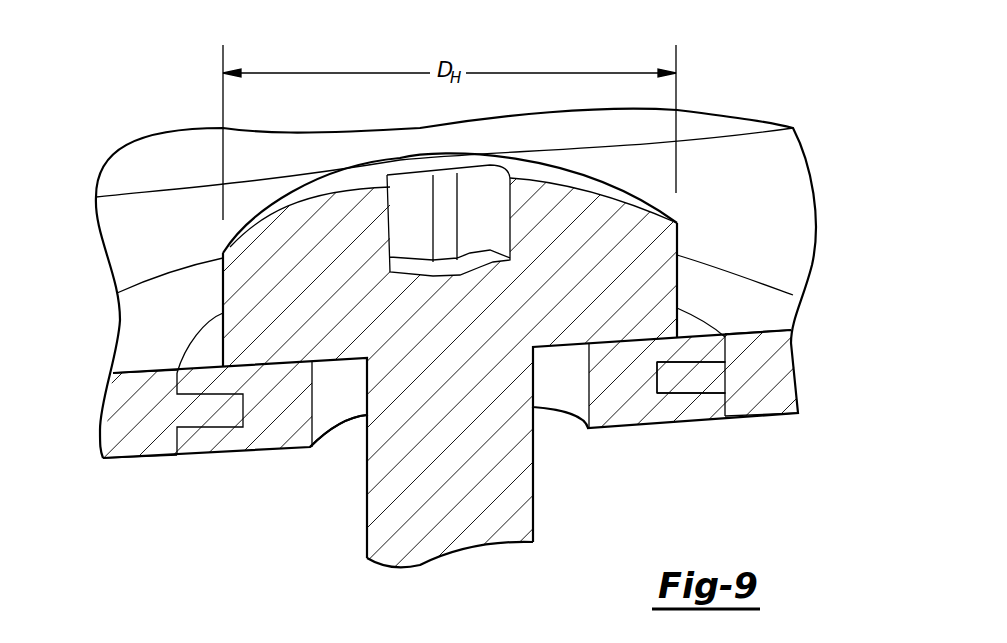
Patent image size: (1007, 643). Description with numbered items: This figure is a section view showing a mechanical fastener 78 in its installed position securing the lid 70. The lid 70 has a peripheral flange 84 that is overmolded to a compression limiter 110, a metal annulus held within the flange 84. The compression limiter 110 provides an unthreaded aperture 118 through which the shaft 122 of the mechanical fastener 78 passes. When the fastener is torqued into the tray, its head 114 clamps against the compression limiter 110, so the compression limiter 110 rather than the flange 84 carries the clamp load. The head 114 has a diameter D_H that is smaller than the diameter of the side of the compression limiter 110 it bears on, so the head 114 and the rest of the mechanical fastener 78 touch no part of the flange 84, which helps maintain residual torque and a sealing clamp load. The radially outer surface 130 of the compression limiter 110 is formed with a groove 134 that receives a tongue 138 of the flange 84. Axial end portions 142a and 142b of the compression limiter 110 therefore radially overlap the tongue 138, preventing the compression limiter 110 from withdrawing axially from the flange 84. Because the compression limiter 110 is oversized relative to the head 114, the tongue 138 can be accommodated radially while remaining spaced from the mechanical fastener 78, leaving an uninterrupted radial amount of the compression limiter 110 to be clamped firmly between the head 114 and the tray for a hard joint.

The lid 70 is at (765, 227).
The peripheral flange 84 is at (773, 262).
The head 114 is at (287, 287).
The shaft 122 is at (533, 475).
The mechanical fastener 78 is at (533, 515).
The aperture 118 is at (350, 442).
The axial end portion 142a is at (207, 375).
The axial end portion 142b is at (210, 447).
The compression limiter 110 is at (680, 413).
The radially outer surface 130 is at (727, 343).
The groove 134 is at (722, 377).
The tongue 138 is at (697, 373).